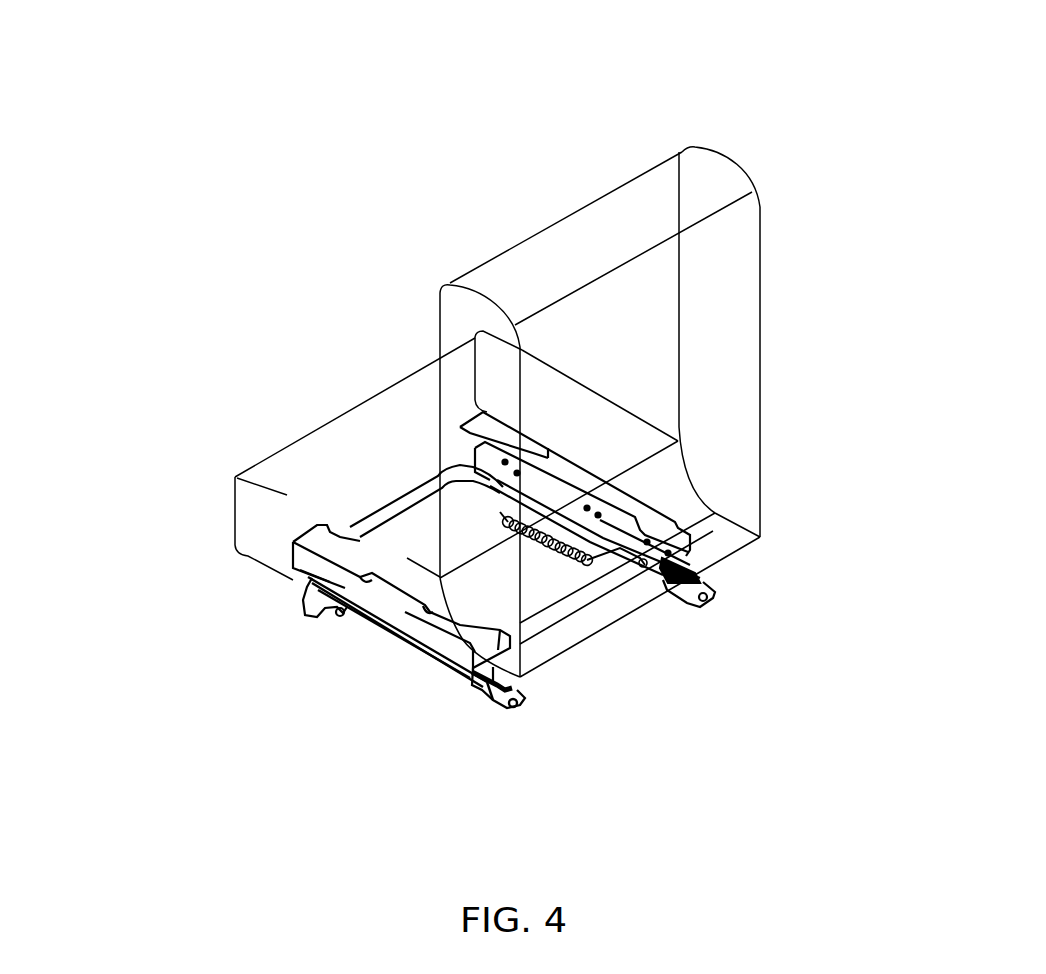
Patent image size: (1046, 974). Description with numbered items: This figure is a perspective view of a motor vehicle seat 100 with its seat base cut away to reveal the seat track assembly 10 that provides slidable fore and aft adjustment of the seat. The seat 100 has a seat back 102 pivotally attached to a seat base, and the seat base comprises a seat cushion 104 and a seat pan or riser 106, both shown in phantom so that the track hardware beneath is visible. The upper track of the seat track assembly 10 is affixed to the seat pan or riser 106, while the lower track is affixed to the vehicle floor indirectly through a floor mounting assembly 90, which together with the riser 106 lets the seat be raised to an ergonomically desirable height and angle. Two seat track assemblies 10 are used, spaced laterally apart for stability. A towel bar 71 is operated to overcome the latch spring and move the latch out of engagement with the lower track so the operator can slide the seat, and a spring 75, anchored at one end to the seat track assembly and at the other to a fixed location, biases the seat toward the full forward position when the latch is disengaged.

The seat track assembly 10 is at (285, 602).
The towel bar 71 is at (380, 507).
The spring 75 is at (540, 550).
The floor mounting assembly 90 is at (490, 704).
The motor vehicle seat 100 is at (812, 140).
The seat back 102 is at (599, 205).
The seat cushion 104 is at (385, 389).
The seat pan or riser 106 is at (332, 580).